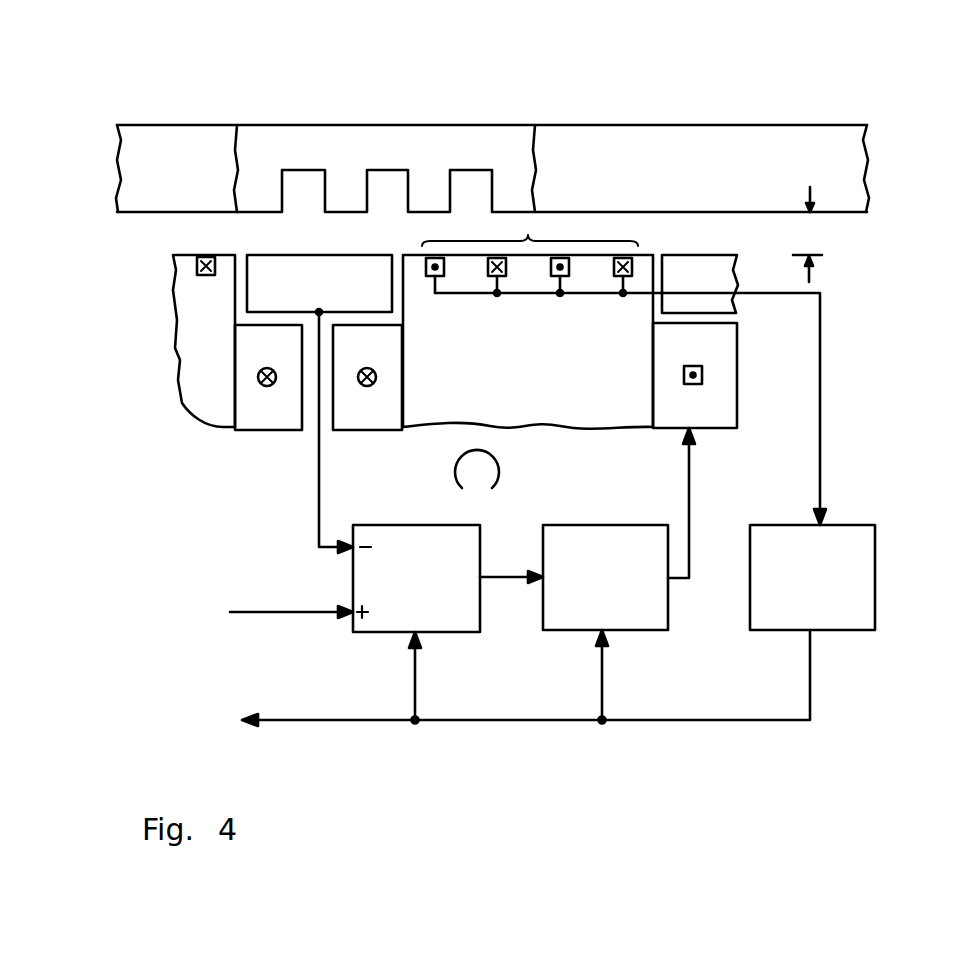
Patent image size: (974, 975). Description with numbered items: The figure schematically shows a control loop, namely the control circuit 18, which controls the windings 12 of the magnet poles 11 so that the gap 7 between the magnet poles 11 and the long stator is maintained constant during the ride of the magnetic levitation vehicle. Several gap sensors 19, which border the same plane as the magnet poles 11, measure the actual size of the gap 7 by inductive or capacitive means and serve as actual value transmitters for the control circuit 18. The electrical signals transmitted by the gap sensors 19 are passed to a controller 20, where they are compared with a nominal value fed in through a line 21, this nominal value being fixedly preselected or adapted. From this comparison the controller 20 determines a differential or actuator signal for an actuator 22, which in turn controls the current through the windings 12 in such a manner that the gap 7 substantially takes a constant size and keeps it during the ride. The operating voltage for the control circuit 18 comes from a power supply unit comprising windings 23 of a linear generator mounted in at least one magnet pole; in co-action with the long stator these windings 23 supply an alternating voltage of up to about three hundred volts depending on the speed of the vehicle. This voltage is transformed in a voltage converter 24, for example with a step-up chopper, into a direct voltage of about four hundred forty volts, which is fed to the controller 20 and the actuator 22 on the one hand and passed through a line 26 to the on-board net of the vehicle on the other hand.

The gap 7 is at (812, 236).
The magnet poles 11 is at (168, 349).
The windings 12 is at (677, 407).
The control circuit 18 is at (477, 470).
The gap sensors 19 is at (313, 283).
The controller 20 is at (428, 603).
The line 21 is at (274, 614).
The actuator 22 is at (617, 605).
The windings of a linear generator 23 is at (528, 235).
The voltage converter 24 is at (832, 598).
The line 26 is at (502, 685).